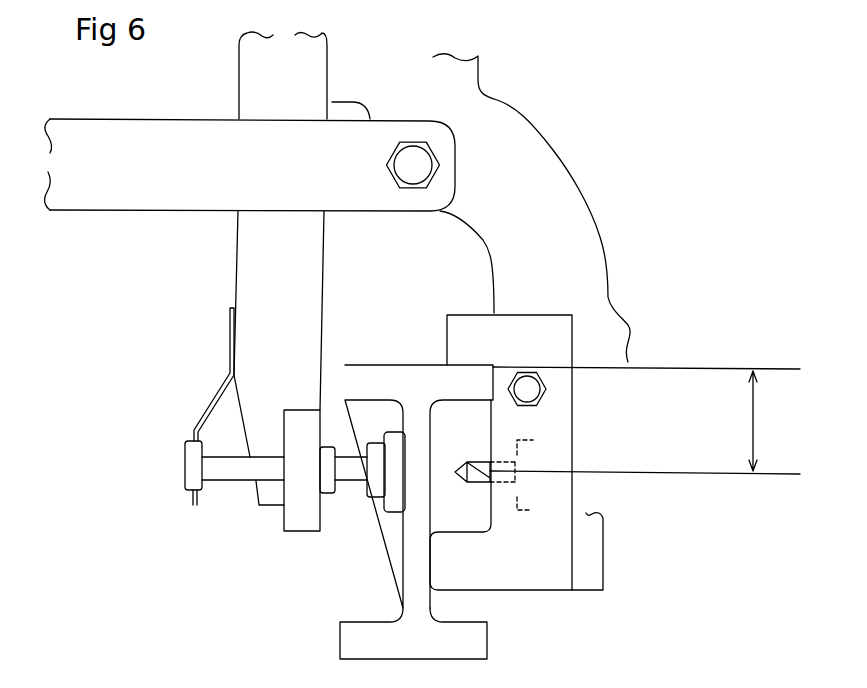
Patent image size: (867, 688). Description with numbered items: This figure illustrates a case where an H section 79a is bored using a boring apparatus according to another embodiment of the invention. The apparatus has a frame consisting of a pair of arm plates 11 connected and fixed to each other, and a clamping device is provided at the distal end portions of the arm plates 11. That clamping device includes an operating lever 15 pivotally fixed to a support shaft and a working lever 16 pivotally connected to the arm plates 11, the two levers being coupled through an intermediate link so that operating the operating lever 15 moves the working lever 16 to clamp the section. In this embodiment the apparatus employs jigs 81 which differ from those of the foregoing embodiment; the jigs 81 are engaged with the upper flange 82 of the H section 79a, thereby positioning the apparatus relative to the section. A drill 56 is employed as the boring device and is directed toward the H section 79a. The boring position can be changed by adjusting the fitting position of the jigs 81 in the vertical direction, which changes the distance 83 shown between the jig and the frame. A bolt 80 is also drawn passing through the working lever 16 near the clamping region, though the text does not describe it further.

The operating lever 15 is at (155, 119).
The working lever 16 is at (237, 233).
The bolt 80 is at (403, 571).
The upper flange 82 is at (389, 365).
The H section 79a is at (340, 634).
The jigs 81 is at (548, 597).
The arm plates 11 is at (604, 568).
The distance 83 is at (774, 421).
The drill 56 is at (474, 484).